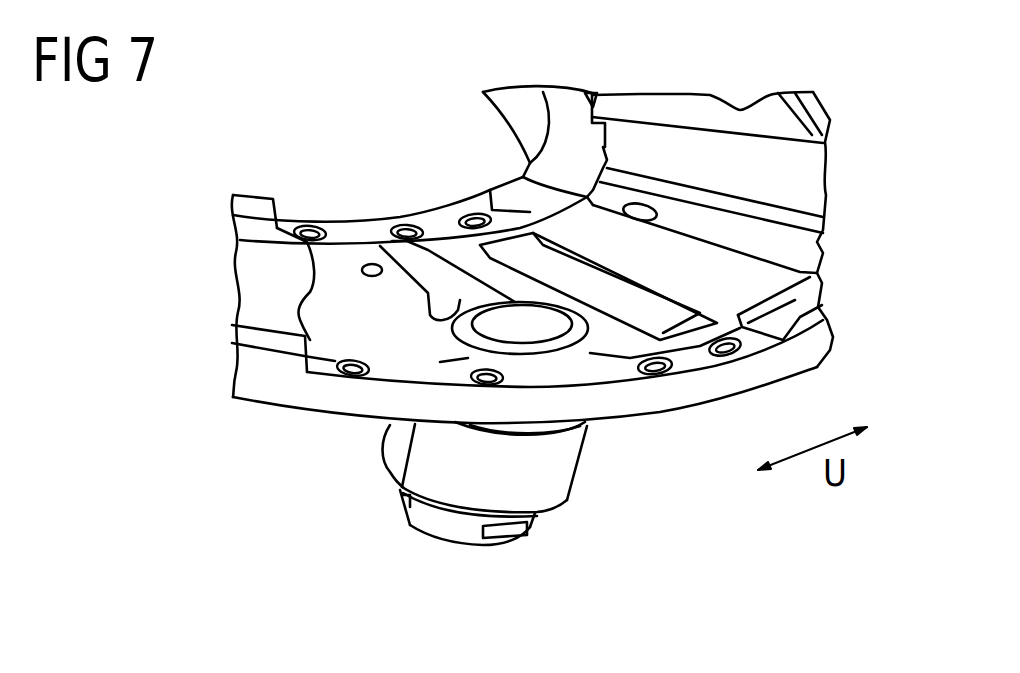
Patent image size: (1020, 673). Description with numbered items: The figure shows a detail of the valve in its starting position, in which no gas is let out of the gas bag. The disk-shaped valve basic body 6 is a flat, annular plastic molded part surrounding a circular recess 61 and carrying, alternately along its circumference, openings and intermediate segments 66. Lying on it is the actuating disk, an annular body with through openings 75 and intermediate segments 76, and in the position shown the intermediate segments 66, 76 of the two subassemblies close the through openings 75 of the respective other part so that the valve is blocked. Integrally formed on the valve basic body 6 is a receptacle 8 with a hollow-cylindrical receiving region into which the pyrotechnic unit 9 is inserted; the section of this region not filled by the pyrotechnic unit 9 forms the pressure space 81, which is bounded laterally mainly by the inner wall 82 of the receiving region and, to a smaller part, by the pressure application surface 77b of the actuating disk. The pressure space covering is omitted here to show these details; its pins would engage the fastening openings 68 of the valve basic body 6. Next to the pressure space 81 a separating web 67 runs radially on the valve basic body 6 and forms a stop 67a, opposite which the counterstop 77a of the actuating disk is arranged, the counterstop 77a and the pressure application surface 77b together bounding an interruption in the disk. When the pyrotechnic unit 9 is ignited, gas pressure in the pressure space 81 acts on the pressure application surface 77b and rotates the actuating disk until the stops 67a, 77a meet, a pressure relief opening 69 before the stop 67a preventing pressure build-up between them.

The valve basic body 6 is at (318, 411).
The receptacle 8 is at (580, 472).
The pyrotechnic unit 9 is at (503, 550).
The circular recess 61 is at (522, 115).
The intermediate segments 66 is at (783, 250).
The separating web 67 is at (453, 292).
The stop 67a is at (405, 222).
The fastening openings 68 is at (307, 222).
The pressure relief opening 69 is at (370, 262).
The through openings 75 is at (795, 220).
The intermediate segments 76 is at (800, 180).
The counterstop 77a is at (317, 273).
The pressure application surface 77b is at (585, 360).
The pressure space 81 is at (453, 316).
The inner wall 82 is at (513, 327).